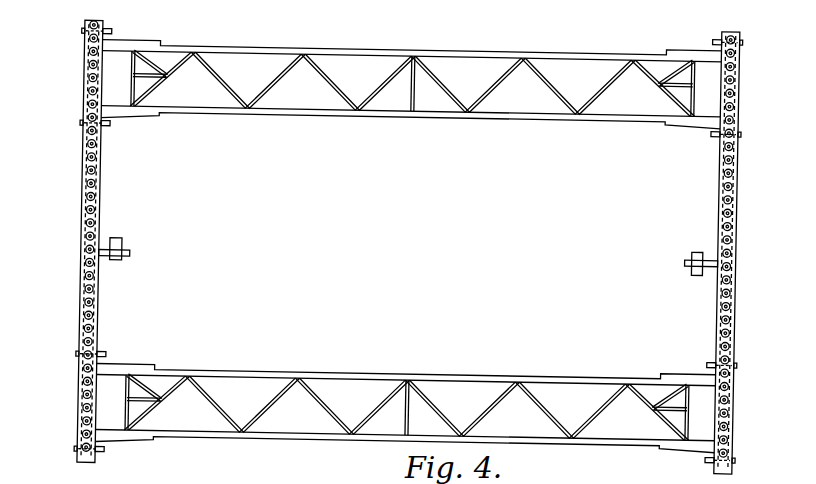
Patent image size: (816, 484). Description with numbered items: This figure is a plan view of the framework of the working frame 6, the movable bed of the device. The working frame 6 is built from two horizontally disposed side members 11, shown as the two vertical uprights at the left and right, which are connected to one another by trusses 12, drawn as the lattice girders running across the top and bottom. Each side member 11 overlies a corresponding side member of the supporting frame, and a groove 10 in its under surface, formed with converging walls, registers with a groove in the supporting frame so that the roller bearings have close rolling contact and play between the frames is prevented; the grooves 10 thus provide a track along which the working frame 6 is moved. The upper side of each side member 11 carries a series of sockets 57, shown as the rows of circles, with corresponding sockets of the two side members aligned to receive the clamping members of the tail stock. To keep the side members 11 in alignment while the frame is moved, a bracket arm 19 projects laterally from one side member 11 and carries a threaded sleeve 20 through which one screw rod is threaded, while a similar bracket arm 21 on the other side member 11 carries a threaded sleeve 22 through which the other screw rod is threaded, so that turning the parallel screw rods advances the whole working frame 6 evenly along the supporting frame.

The working frame 6 is at (78, 241).
The groove 10 is at (84, 304).
The side member 11 is at (84, 333).
The truss 12 is at (538, 118).
The bracket arm 19 is at (107, 263).
The threaded sleeve 20 is at (122, 248).
The bracket arm 21 is at (710, 263).
The threaded sleeve 22 is at (690, 267).
The socket 57 is at (85, 196).